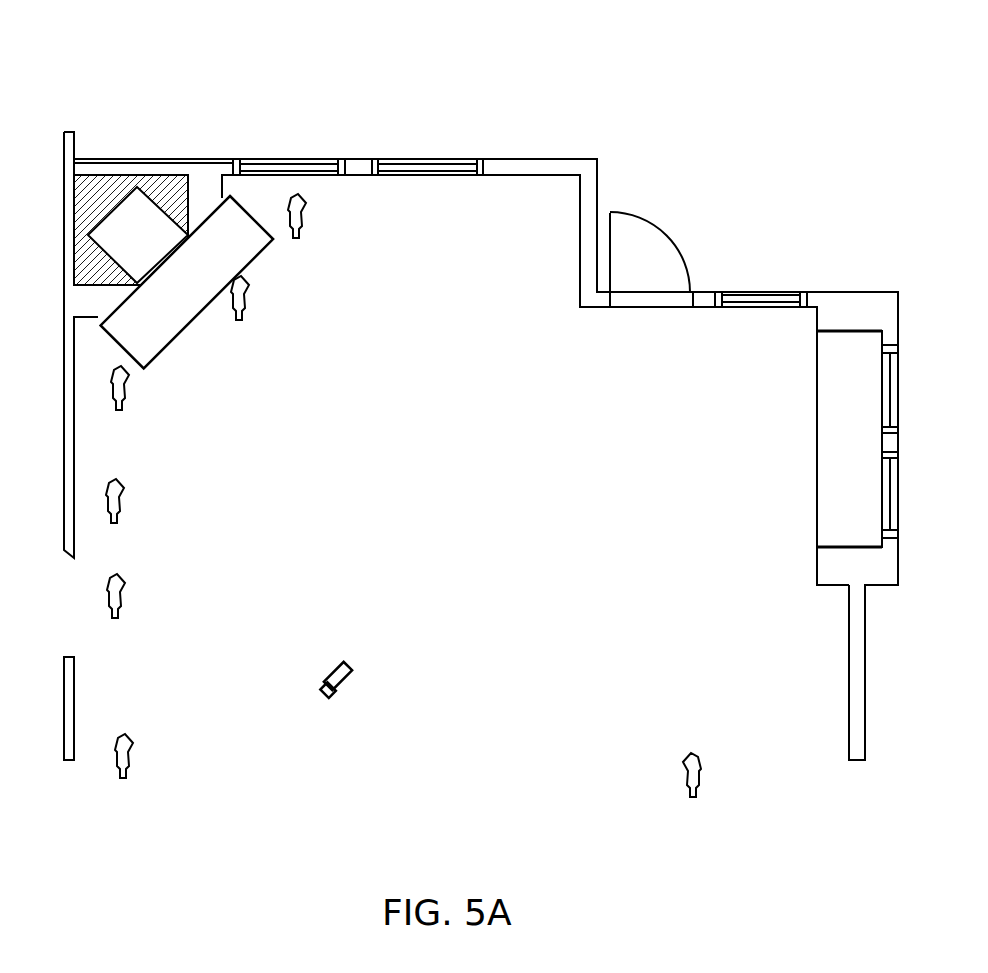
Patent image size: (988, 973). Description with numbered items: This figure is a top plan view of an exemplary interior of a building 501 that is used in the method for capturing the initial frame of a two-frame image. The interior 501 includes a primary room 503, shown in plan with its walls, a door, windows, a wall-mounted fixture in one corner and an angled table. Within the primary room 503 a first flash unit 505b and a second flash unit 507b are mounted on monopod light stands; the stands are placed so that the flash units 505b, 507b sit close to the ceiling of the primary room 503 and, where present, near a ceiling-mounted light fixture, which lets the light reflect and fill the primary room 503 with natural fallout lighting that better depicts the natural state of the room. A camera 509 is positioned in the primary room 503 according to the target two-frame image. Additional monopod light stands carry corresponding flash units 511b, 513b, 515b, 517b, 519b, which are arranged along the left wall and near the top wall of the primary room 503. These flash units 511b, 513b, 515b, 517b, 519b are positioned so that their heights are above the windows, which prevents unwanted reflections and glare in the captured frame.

The interior of a building 501 is at (138, 48).
The primary room 503 is at (493, 538).
The first flash unit 505b is at (130, 767).
The second flash unit 507b is at (684, 786).
The camera 509 is at (350, 673).
The flash unit 511b is at (122, 607).
The flash unit 513b is at (121, 511).
The flash unit 515b is at (126, 400).
The flash unit 517b is at (245, 311).
The flash unit 519b is at (300, 197).